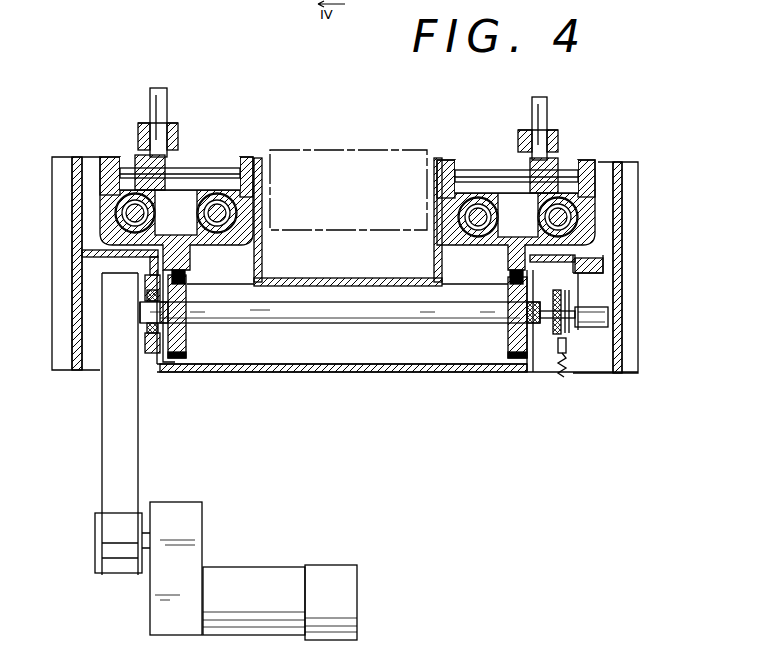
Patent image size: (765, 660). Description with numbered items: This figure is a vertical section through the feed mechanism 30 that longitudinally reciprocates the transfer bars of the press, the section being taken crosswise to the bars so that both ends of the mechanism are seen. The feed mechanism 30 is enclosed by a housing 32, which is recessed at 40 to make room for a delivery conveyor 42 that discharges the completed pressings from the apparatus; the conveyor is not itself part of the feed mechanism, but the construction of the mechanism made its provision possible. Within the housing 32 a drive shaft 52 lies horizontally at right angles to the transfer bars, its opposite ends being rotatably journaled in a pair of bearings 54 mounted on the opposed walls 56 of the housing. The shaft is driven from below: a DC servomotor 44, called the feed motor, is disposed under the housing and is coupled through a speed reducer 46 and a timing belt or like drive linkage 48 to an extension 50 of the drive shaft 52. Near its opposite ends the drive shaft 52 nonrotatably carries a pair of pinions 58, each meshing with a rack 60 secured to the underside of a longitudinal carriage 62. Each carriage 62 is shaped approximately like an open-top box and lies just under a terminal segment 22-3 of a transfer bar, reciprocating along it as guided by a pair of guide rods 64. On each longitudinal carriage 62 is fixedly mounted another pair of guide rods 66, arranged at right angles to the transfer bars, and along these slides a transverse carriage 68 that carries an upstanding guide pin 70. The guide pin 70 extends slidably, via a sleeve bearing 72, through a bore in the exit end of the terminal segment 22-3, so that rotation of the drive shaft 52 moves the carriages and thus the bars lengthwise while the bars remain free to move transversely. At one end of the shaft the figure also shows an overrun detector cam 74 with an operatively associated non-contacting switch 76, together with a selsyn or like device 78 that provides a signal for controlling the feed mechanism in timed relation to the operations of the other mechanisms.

The terminal segment 22-3 is at (141, 123).
The feed mechanism 30 is at (639, 152).
The housing 32 is at (402, 376).
The recess 40 is at (322, 278).
The delivery conveyor 42 is at (372, 152).
The DC servomotor 44 is at (290, 578).
The speed reducer 46 is at (192, 512).
The timing belt 48 is at (102, 422).
The extension 50 is at (146, 310).
The drive shaft 52 is at (288, 324).
The bearings 54 is at (150, 328).
The walls 56 is at (166, 366).
The pinions 58 is at (186, 342).
The racks 60 is at (188, 268).
The longitudinal carriage 62 is at (100, 180).
The guide rods 64 is at (120, 216).
The guide rods 66 is at (205, 165).
The transverse carriage 68 is at (160, 190).
The guide pin 70 is at (165, 88).
The sleeve bearing 72 is at (175, 124).
The overrun detector cam 74 is at (564, 332).
The non-contacting switch 76 is at (568, 360).
The selsyn 78 is at (608, 316).